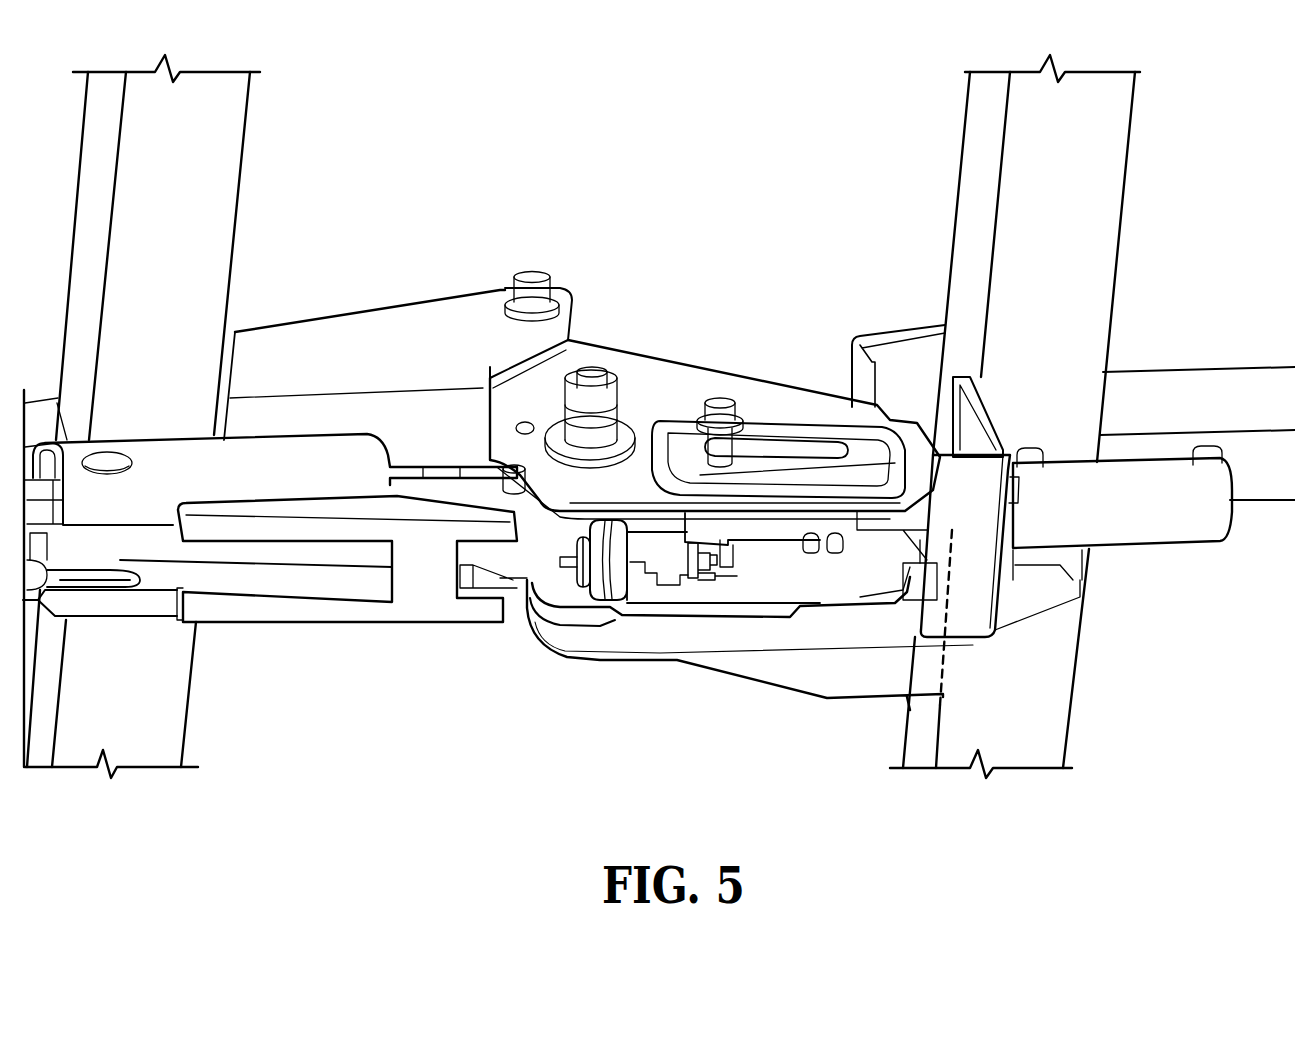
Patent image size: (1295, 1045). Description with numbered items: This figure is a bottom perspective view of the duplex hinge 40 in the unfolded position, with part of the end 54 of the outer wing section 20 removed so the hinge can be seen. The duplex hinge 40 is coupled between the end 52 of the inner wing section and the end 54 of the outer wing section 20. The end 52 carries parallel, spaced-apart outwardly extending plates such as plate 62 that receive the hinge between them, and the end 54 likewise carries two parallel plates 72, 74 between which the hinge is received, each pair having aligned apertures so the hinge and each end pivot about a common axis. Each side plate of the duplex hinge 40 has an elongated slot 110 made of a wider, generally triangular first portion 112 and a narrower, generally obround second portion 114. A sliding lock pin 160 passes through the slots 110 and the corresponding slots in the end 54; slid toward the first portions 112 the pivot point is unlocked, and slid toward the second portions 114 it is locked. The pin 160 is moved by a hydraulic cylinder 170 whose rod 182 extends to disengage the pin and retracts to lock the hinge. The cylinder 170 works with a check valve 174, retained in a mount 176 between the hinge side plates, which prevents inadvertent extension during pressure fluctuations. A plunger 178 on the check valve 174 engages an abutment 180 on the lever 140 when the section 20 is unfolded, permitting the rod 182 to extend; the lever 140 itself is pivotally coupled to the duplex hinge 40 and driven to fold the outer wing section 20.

The outer wing section 20 is at (1070, 200).
The duplex hinge 40 is at (655, 297).
The end of the inner wing section 52 is at (413, 360).
The end of the outer wing section 54 is at (768, 625).
The plate 62 is at (462, 323).
The plate 72 is at (573, 370).
The plate 74 is at (657, 653).
The elongated slot 110 is at (767, 453).
The first portion of slot 112 is at (743, 443).
The second portion of slot 114 is at (835, 447).
The lever 140 is at (232, 553).
The lock pin 160 is at (719, 403).
The hydraulic cylinder 170 is at (1165, 518).
The check valve 174 is at (653, 550).
The mount 176 is at (620, 570).
The plunger 178 is at (577, 566).
The abutment 180 is at (512, 563).
The rod 182 is at (777, 532).